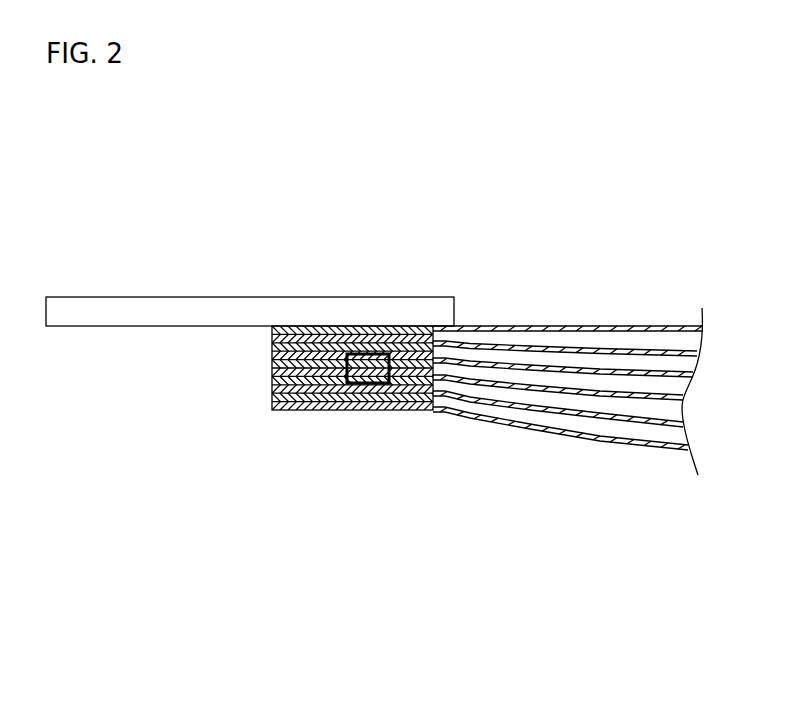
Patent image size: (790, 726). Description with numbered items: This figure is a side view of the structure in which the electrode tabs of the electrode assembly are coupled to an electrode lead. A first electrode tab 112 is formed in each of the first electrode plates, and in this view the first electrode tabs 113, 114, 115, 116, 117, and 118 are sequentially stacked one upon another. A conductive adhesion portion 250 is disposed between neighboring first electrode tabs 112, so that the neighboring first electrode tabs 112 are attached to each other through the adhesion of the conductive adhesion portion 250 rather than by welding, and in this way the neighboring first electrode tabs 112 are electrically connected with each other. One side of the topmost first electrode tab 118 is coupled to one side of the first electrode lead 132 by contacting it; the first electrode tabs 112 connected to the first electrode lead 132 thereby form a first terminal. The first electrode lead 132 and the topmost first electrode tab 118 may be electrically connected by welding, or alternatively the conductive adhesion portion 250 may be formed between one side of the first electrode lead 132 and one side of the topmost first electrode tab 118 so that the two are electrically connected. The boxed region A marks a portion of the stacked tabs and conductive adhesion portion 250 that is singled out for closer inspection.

The first electrode tab 112 is at (678, 493).
The first electrode tab 113 is at (301, 410).
The first electrode tab 114 is at (357, 393).
The first electrode tab 115 is at (420, 378).
The first electrode tab 116 is at (634, 372).
The first electrode tab 117 is at (566, 350).
The topmost first electrode tab 118 is at (525, 327).
The first electrode lead 132 is at (240, 300).
The conductive adhesion portion 250 is at (335, 333).
The enlarged region A is at (379, 333).